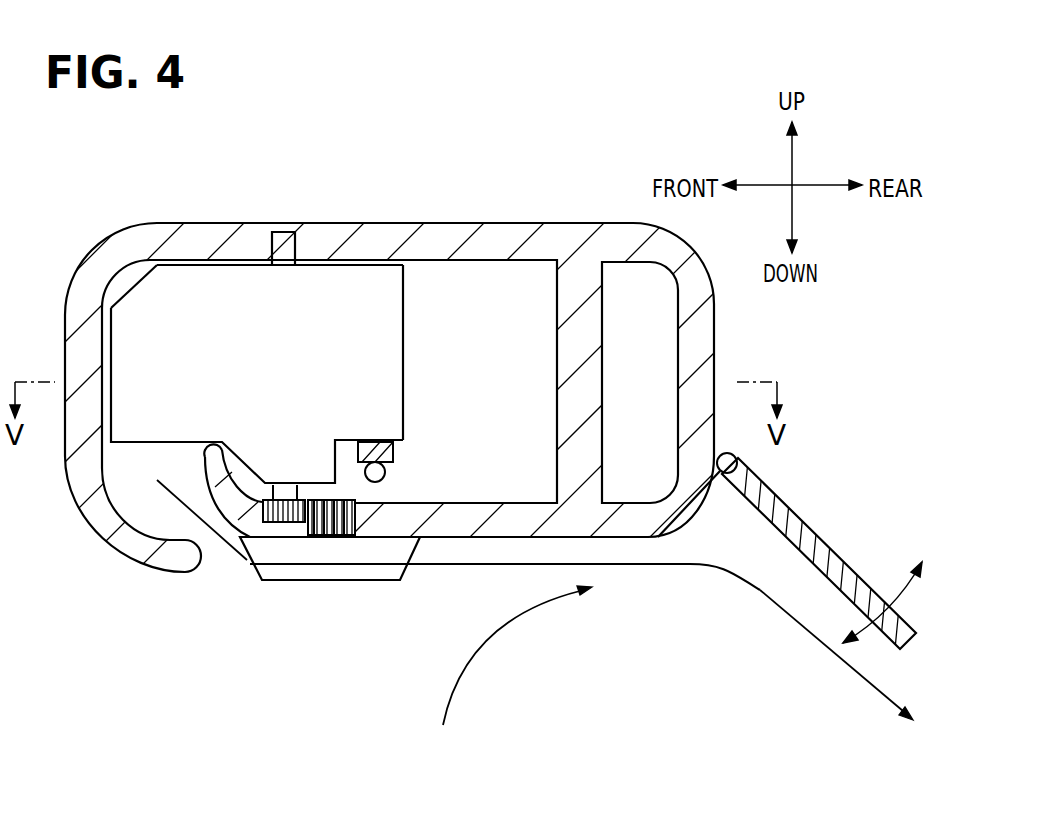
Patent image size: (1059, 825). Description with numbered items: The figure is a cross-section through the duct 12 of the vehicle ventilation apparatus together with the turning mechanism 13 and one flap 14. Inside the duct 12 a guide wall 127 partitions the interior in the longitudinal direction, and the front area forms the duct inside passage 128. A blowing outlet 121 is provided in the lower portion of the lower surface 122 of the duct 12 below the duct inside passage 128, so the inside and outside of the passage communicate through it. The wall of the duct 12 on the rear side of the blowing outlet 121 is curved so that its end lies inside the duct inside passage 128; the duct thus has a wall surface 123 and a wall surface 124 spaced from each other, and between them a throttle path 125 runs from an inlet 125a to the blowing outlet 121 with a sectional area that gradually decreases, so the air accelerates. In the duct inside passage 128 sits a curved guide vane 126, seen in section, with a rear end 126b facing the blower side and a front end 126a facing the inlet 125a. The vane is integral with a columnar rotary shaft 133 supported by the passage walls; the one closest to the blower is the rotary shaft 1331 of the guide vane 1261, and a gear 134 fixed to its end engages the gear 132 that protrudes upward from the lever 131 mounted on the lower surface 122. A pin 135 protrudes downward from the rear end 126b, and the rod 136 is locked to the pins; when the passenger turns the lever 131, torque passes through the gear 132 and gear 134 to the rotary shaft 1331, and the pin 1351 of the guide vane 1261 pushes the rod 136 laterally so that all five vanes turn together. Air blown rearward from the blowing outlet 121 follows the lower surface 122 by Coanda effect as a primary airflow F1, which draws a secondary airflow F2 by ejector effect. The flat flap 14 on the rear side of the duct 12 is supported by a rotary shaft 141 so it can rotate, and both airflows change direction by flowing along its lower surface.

The duct 12 is at (540, 222).
The throttle path 125 is at (131, 504).
The inlet 125a is at (137, 463).
The duct inside passage 128 is at (512, 379).
The guide wall 127 is at (612, 285).
The guide vane 126 is at (270, 314).
The guide vane 1261 is at (362, 283).
The front end 126a is at (130, 290).
The rear end 126b is at (403, 317).
The rotary shaft 133 is at (277, 205).
The rotary shaft 1331 is at (285, 245).
The rod 136 is at (393, 445).
The pin 135 is at (455, 473).
The pin 1351 is at (386, 472).
The wall surface 124 is at (208, 502).
The wall surface 123 is at (157, 480).
The turning mechanism 13 is at (463, 620).
The lever 131 is at (325, 580).
The gear 132 is at (353, 522).
The gear 134 is at (283, 522).
The blowing outlet 121 is at (248, 562).
The lower surface 122 is at (585, 539).
The rotary shaft 141 is at (738, 455).
The flap 14 is at (834, 535).
The primary airflow F1 is at (850, 690).
The secondary airflow F2 is at (477, 660).